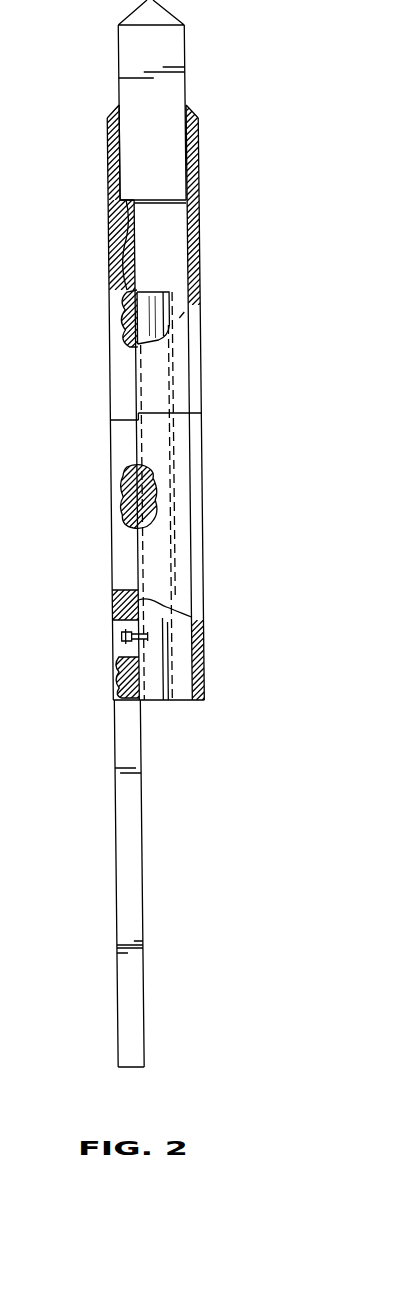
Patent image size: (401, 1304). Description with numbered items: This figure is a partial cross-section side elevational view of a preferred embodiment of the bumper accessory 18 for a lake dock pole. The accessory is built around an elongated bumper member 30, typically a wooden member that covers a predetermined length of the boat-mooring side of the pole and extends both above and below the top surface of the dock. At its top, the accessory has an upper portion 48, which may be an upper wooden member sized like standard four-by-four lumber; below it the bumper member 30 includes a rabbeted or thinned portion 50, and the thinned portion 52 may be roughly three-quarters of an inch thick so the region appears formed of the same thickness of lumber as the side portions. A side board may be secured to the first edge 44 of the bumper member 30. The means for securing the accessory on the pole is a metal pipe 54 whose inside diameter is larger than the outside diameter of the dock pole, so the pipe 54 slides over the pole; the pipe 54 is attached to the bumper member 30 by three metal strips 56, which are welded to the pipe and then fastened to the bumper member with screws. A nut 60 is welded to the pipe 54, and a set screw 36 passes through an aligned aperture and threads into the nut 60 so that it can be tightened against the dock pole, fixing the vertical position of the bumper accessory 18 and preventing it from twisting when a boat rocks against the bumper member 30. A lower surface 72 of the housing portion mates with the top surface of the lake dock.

The bumper accessory 18 is at (55, 255).
The bumper member 30 is at (112, 838).
The set screw 36 is at (115, 640).
The first edge 44 is at (107, 928).
The upper portion 48 is at (164, 47).
The rabbeted or thinned portion 50 is at (131, 179).
The thinned portion 52 is at (107, 130).
The pipe 54 is at (147, 292).
The metal strips 56 is at (127, 318).
The nut 60 is at (108, 617).
The lower surface 72 is at (190, 700).